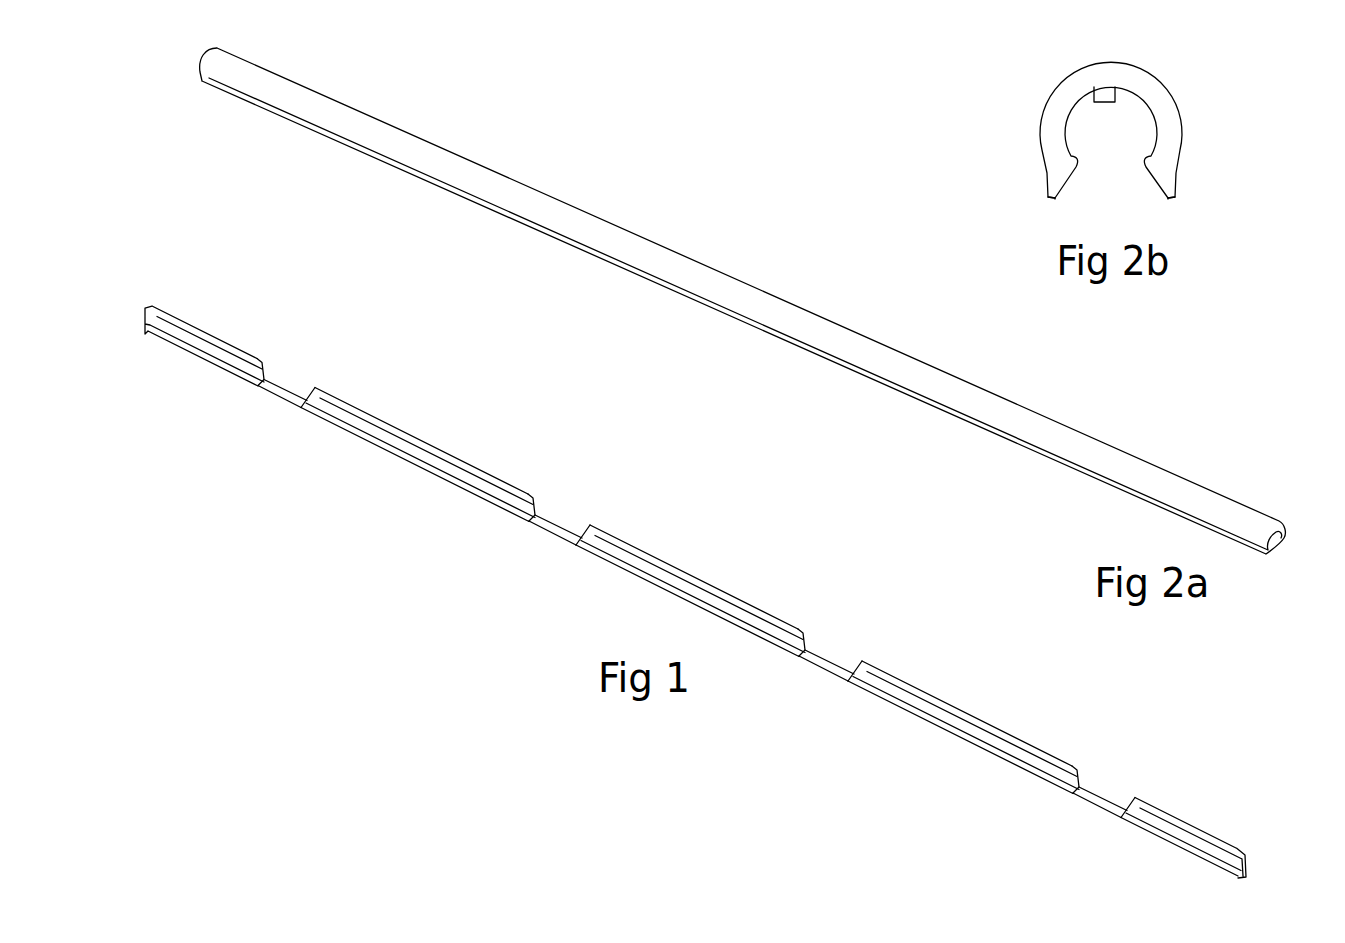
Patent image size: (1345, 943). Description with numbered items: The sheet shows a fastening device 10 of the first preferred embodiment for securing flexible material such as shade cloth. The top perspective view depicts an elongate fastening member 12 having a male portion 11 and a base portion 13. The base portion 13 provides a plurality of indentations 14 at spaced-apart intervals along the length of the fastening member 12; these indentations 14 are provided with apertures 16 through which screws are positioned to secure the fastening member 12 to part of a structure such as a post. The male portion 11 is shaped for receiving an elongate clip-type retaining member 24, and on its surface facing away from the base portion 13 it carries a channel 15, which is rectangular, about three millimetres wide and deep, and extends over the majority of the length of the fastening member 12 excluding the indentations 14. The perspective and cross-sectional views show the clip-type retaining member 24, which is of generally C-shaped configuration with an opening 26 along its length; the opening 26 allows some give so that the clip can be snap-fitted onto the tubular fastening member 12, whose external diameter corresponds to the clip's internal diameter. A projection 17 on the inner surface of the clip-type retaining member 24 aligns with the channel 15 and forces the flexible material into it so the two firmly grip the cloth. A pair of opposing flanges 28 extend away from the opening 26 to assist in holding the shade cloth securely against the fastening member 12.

In FIG. 1, the fastening device 10 is at (830, 520).
In FIG. 1, the male portion 11 is at (1197, 800).
In FIG. 1, the elongate fastening member 12 is at (948, 706).
In FIG. 1, the base portion 13 is at (932, 752).
In FIG. 1, the indentations 14 is at (287, 392).
In FIG. 1, the channel 15 is at (120, 275).
In FIG. 1, the apertures 16 is at (282, 402).
In FIG. 2B, the projection 17 is at (1095, 97).
In FIG. 2A, the clip-type retaining member 24 is at (702, 277).
In FIG. 2B, the clip-type retaining member 24 is at (1165, 92).
In FIG. 2A, the opening 26 is at (1278, 542).
In FIG. 2B, the opening 26 is at (1112, 156).
In FIG. 2B, the flanges 28 is at (1063, 175).